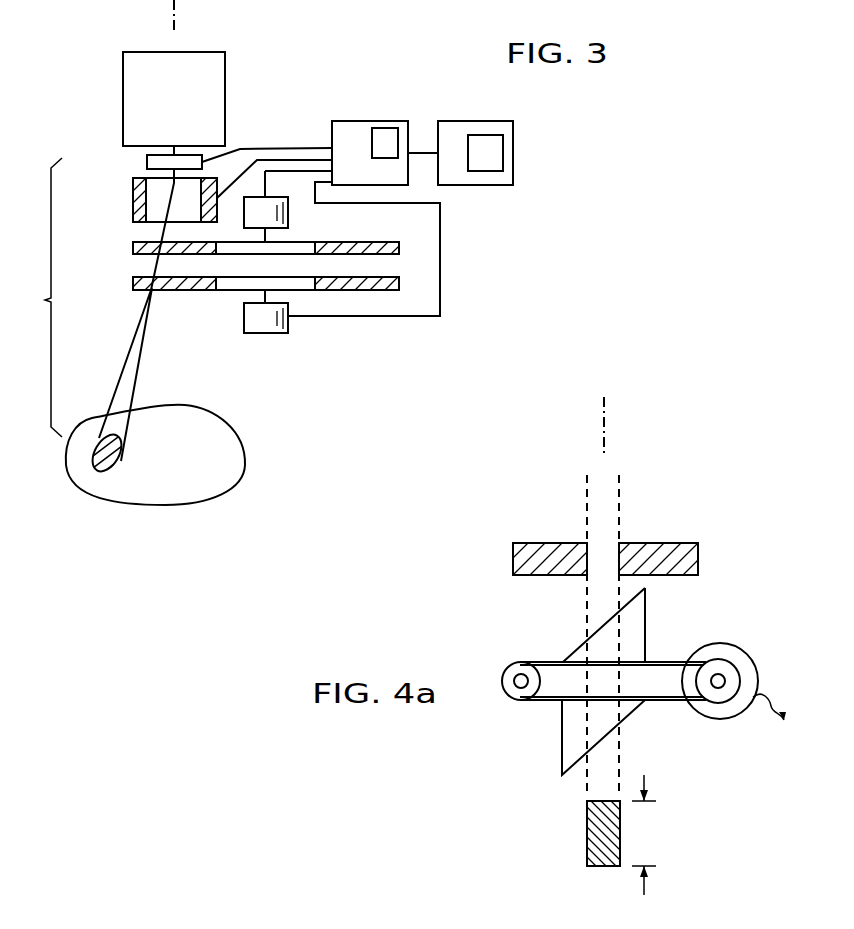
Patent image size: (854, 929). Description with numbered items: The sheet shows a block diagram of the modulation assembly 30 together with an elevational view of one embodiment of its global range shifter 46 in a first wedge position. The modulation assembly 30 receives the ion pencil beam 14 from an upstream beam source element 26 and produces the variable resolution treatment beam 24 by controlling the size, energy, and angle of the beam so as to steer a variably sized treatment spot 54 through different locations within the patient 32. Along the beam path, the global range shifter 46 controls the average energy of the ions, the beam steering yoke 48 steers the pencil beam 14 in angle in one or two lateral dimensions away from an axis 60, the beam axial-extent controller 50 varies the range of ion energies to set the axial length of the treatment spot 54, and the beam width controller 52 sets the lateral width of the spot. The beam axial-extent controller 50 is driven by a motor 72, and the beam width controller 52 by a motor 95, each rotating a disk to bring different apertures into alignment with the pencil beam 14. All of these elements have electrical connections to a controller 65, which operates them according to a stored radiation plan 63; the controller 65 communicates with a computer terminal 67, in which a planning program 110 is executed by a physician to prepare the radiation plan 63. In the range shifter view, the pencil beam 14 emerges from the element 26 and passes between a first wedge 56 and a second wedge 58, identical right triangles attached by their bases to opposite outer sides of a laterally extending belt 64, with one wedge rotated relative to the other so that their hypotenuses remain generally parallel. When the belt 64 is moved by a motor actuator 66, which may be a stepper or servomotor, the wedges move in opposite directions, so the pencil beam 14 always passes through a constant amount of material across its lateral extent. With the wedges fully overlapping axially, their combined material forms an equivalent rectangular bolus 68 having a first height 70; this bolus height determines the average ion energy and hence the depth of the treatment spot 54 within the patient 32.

In FIG. 3, the pencil beam 14 is at (174, 194).
In FIG. 4a, the pencil beam 14 is at (606, 508).
In FIG. 3, the variable resolution treatment beam 24 is at (124, 390).
In FIG. 3, the laser source / housing 26 is at (188, 104).
In FIG. 4a, the laser source / housing 26 is at (656, 545).
In FIG. 3, the modulation assembly 30 is at (38, 297).
In FIG. 3, the patient 32 is at (198, 467).
In FIG. 3, the global range shifter 46 is at (147, 163).
In FIG. 4a, the global range shifter 46 is at (531, 629).
In FIG. 3, the beam steering yoke 48 is at (133, 212).
In FIG. 3, the beam axial-extent controller 50 is at (133, 248).
In FIG. 3, the beam width controller 52 is at (133, 283).
In FIG. 3, the treatment spot 54 is at (103, 466).
In FIG. 4a, the first wedge 56 is at (637, 624).
In FIG. 4a, the second wedge 58 is at (575, 731).
In FIG. 4a, the axis 60 is at (606, 425).
In FIG. 3, the radiation plan 63 is at (386, 128).
In FIG. 4a, the belt 64 is at (673, 660).
In FIG. 3, the controller 65 is at (370, 121).
In FIG. 4a, the motor actuator 66 is at (732, 708).
In FIG. 3, the computer terminal 67 is at (478, 121).
In FIG. 4a, the equivalent rectangular bolus 68 is at (587, 841).
In FIG. 4a, the first height 70 is at (647, 832).
In FIG. 3, the motor 72 is at (288, 212).
In FIG. 3, the motor 95 is at (265, 333).
In FIG. 3, the program 110 is at (503, 152).